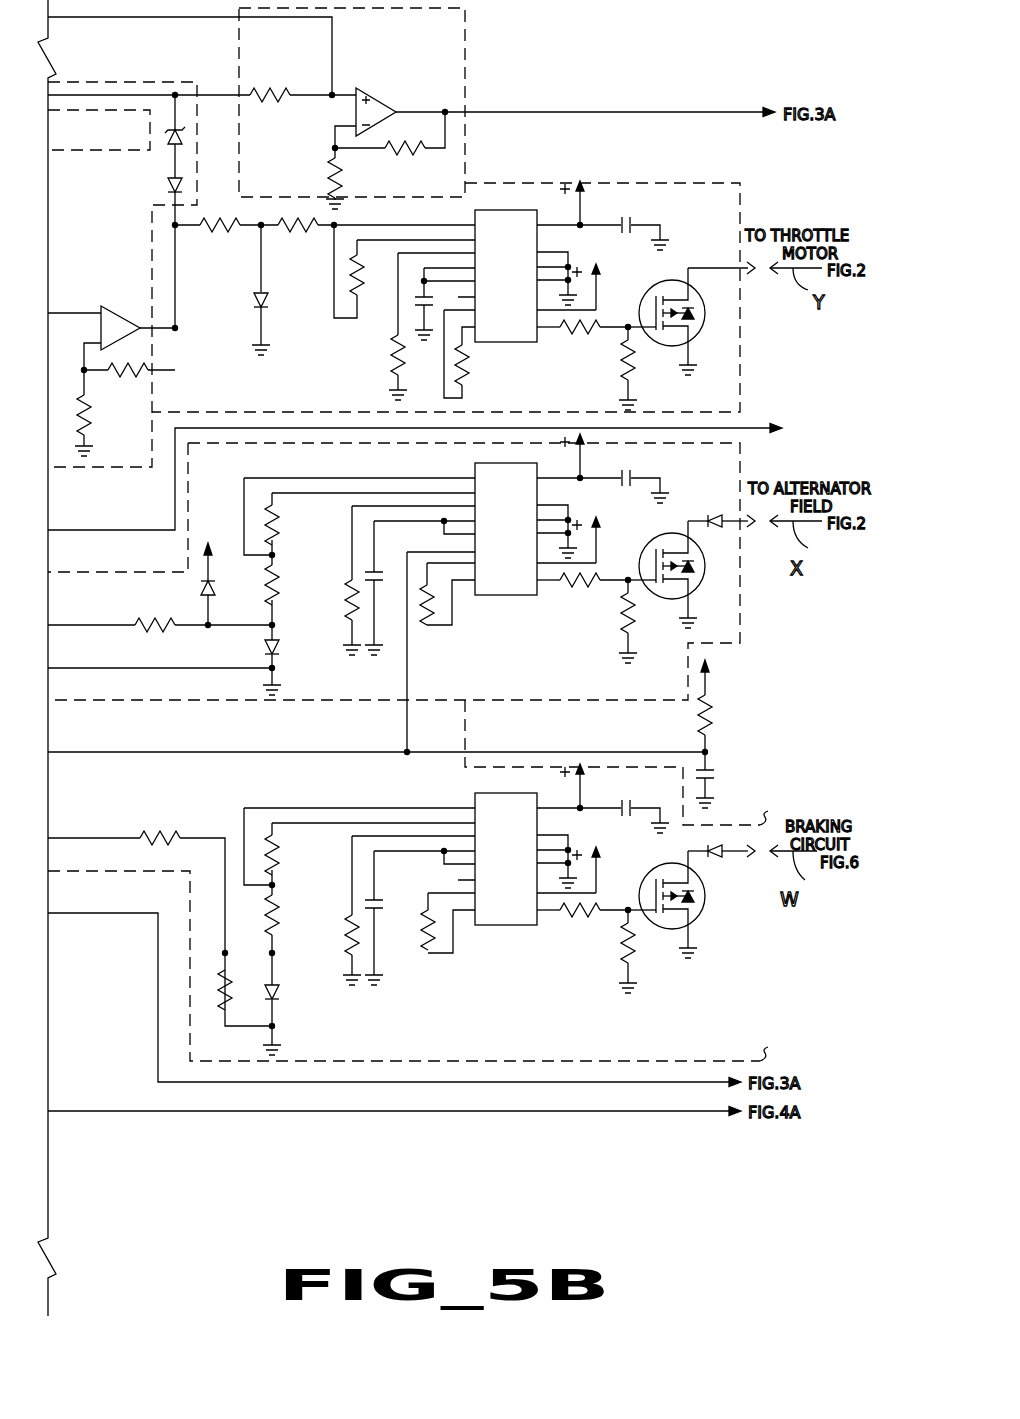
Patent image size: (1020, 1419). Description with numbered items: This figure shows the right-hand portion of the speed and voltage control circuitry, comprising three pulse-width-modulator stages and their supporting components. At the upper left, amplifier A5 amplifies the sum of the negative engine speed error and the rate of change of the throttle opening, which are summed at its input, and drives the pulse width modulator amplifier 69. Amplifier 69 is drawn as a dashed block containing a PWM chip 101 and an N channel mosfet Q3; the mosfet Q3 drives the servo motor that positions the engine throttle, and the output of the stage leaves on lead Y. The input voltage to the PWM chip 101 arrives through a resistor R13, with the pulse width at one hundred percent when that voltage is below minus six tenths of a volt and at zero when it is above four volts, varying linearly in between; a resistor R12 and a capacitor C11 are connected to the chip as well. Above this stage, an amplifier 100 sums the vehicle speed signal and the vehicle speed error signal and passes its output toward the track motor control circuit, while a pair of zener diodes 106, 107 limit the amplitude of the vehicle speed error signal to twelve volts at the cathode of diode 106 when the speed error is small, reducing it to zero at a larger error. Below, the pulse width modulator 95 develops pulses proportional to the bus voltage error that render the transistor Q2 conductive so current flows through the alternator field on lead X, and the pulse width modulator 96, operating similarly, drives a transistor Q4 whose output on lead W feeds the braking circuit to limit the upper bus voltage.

The pulse width modulator amplifier 69 is at (652, 182).
The pulse width modulator 95 is at (500, 597).
The pulse width modulator 96 is at (490, 927).
The amplifier 100 is at (372, 93).
The PWM chip 101 is at (497, 342).
The zener diode 106 is at (165, 135).
The zener diode 107 is at (165, 183).
The amplifier A5 is at (118, 305).
The resistor R12 is at (394, 358).
The resistor R13 is at (292, 238).
The capacitor C11 is at (410, 308).
The transistor Q2 is at (670, 535).
The N channel mosfet Q3 is at (672, 282).
The braking circuit MOSFET Q4 is at (670, 864).